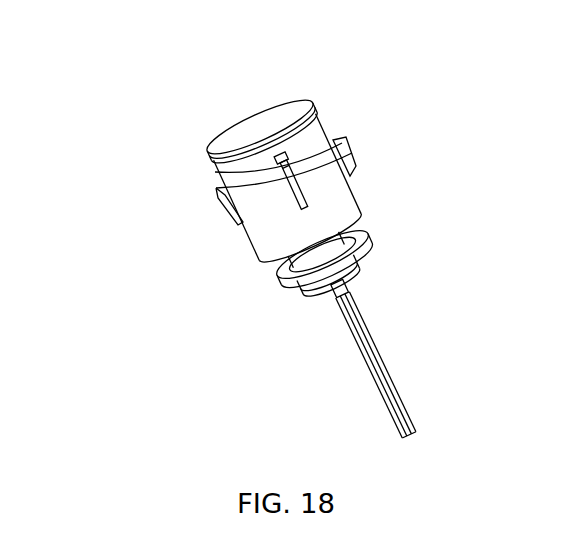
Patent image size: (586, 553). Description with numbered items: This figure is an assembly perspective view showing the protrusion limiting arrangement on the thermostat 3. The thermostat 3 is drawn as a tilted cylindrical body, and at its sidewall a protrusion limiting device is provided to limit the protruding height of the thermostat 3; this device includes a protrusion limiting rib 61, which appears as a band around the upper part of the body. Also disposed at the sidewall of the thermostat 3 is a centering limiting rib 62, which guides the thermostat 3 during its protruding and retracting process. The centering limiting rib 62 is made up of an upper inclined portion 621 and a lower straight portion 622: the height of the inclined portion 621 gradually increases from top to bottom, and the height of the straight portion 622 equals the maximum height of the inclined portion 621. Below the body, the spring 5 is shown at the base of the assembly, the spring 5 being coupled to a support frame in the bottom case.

The thermostat 3 is at (313, 108).
The protrusion limiting rib 61 is at (334, 141).
The centering limiting rib 62 is at (85, 160).
The inclined portion 621 is at (278, 158).
The straight portion 622 is at (284, 169).
The spring 5 is at (366, 243).